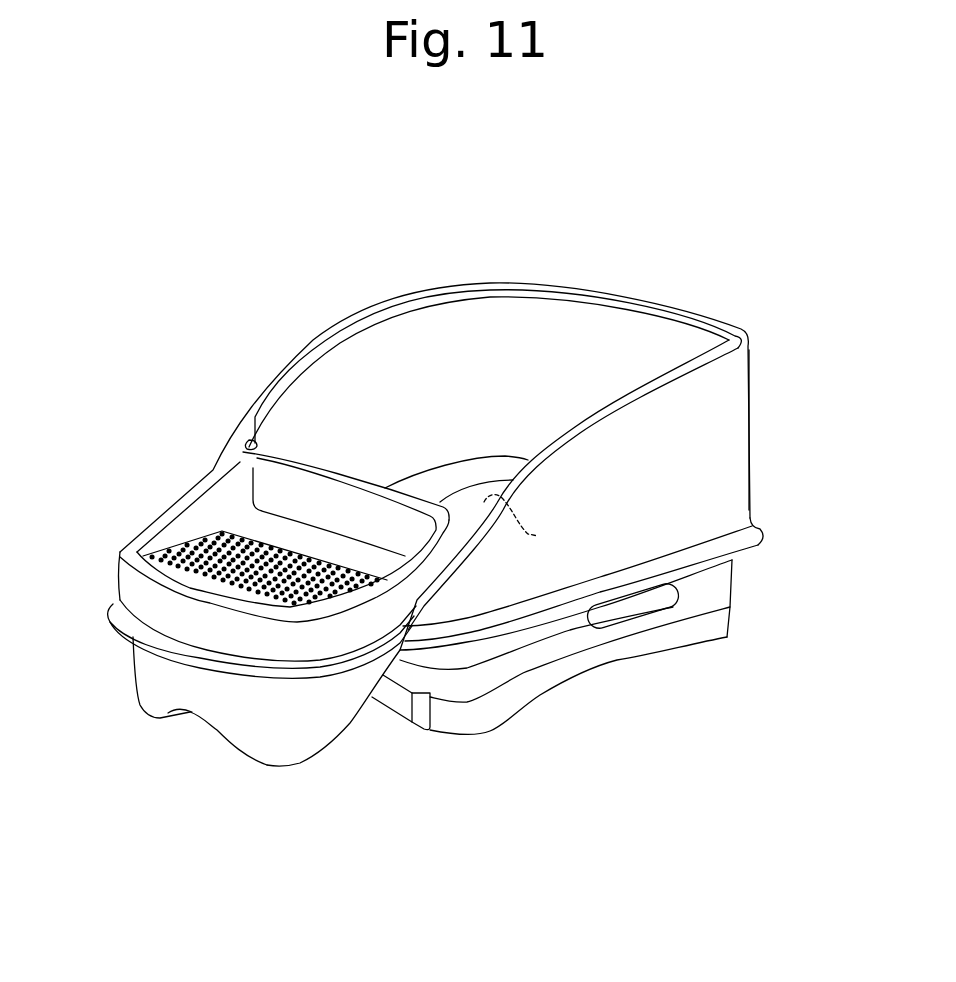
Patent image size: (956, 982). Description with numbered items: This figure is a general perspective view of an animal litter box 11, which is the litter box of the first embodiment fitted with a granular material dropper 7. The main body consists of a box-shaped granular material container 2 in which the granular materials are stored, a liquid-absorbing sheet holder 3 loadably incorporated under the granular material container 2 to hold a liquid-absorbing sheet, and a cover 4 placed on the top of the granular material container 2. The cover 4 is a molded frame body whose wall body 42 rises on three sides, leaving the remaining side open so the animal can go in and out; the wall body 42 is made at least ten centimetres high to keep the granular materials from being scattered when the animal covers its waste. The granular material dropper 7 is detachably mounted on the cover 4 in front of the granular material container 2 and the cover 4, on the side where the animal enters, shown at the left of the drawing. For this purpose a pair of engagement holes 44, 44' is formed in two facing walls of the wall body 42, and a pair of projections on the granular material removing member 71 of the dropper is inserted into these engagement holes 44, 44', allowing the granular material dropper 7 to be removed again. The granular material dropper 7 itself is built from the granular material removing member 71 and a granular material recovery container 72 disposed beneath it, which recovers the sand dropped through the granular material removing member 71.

The animal litter box 11 is at (428, 226).
The granular material container 2 is at (745, 583).
The liquid-absorbing sheet holder 3 is at (380, 720).
The cover 4 is at (756, 433).
The wall body 42 is at (724, 496).
The engagement hole 44 is at (230, 401).
The engagement hole 44' is at (544, 521).
The granular material dropper 7 is at (152, 497).
The granular material removing member 71 is at (130, 593).
The granular material recovery container 72 is at (252, 732).